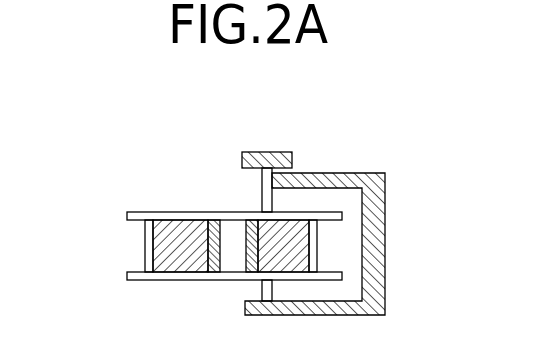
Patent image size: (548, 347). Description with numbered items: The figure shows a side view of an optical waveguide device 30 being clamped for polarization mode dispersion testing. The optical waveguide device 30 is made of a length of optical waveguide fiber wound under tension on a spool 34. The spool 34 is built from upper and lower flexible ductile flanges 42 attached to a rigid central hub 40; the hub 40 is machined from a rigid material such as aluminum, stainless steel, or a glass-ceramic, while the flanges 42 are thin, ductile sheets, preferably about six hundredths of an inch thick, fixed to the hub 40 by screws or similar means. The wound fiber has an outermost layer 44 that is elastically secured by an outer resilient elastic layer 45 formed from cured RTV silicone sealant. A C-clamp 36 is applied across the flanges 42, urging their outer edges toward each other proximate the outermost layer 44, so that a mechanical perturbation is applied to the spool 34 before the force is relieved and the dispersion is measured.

The optical waveguide device 30 is at (90, 105).
The spool 34 is at (141, 192).
The C-clamp 36 is at (385, 184).
The rigid central hub 40 is at (210, 200).
The flexible ductile flanges 42 is at (127, 215).
The outermost layer of wound optical fiber 44 is at (312, 240).
The outer resilient elastic layer 45 is at (145, 239).